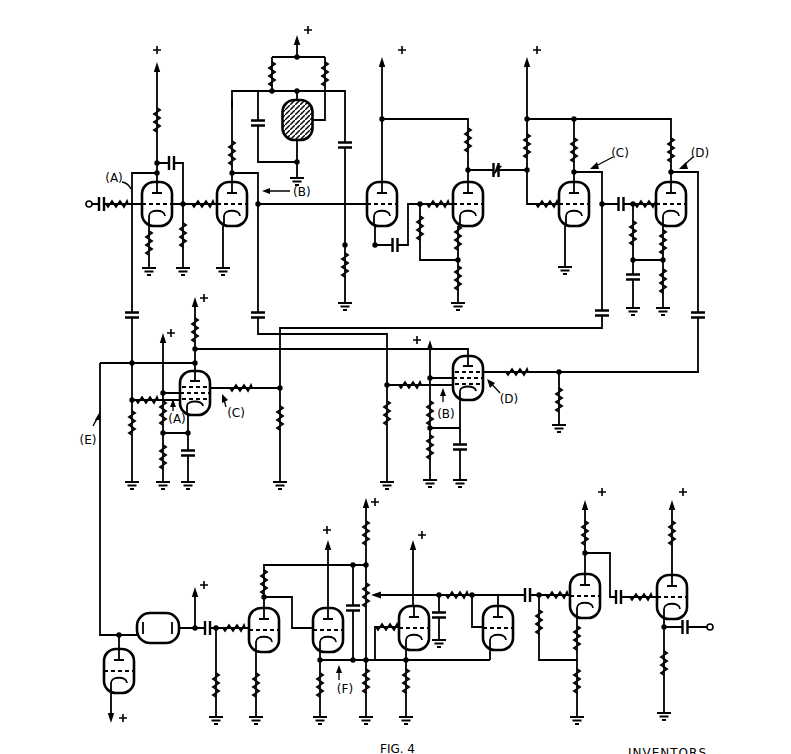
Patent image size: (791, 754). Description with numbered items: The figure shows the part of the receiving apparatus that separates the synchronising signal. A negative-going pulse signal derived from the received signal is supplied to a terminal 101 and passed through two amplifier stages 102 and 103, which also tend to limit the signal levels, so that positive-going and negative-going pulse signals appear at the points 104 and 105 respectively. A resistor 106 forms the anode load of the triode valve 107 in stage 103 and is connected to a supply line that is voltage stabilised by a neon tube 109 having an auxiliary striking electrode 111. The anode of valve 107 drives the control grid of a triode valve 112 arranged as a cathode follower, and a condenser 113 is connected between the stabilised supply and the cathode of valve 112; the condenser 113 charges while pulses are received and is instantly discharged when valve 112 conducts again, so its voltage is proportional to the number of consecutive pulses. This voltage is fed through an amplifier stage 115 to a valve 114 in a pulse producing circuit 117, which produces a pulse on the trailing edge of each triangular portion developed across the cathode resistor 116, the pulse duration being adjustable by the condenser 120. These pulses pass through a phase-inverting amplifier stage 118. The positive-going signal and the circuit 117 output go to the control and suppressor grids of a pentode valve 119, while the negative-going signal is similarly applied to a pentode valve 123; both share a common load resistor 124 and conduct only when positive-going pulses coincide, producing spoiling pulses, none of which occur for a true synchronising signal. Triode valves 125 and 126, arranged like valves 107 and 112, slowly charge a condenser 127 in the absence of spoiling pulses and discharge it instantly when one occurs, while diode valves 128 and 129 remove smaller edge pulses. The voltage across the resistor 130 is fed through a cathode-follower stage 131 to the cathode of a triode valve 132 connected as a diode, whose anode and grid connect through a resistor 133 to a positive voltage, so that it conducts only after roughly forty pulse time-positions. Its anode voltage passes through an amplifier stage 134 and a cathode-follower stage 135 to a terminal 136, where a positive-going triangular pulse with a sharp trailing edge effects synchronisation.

The terminal 101 is at (92, 208).
The amplifier stage 102 is at (151, 218).
The amplifier stage 103 is at (197, 224).
The point 104 is at (155, 169).
The point 105 is at (229, 172).
The resistor 106 is at (232, 132).
The triode valve 107 is at (250, 221).
The neon tube 109 is at (292, 130).
The auxiliary striking electrode 111 is at (313, 126).
The triode valve 112 is at (368, 192).
The condenser 113 is at (351, 140).
The valve 114 is at (581, 224).
The amplifier stage 115 is at (455, 218).
The cathode resistor 116 is at (351, 262).
The pulse producing circuit 117 is at (545, 220).
The amplifier stage 118 is at (662, 213).
The pentode valve 119 is at (206, 378).
The condenser 120 is at (499, 177).
The pentode valve 123 is at (485, 362).
The load resistor 124 is at (203, 334).
The triode valve 125 is at (278, 648).
The triode valve 126 is at (334, 606).
The condenser 127 is at (372, 600).
The diode valve 128 is at (134, 672).
The diode valve 129 is at (170, 642).
The resistor 130 is at (318, 687).
The cathode-follower stage 131 is at (402, 645).
The triode valve 132 is at (514, 646).
The resistor 133 is at (463, 590).
The amplifier stage 134 is at (552, 627).
The cathode-follower stage 135 is at (650, 662).
The terminal 136 is at (710, 632).